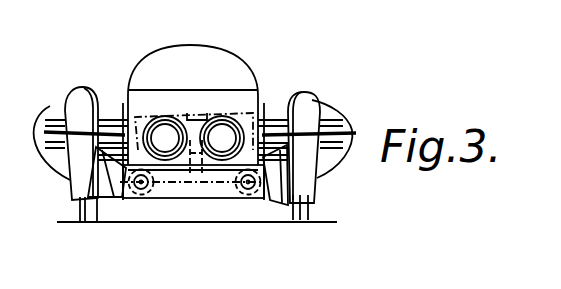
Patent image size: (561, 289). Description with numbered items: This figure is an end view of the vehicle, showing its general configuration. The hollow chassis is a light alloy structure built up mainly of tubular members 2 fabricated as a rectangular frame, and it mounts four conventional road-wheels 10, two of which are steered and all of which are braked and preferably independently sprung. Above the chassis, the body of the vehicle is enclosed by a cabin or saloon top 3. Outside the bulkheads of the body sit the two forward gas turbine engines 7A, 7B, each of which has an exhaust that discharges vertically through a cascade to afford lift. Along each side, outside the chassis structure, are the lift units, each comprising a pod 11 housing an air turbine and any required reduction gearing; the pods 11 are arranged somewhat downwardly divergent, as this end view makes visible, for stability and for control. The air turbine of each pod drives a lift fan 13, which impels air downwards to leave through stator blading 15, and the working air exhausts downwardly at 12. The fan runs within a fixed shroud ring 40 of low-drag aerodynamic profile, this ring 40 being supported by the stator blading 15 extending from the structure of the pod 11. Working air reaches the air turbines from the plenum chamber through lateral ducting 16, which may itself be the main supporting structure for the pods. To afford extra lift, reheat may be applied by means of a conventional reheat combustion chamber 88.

The cabin or saloon top 3 is at (217, 55).
The forward gas turbine engine 7A is at (223, 128).
The forward gas turbine engine 7B is at (165, 132).
The lift fan 13 is at (53, 128).
The shroud ring 40 is at (353, 131).
The pod 11 is at (315, 160).
The stator blading 15 is at (62, 143).
The working air exhaust 12 is at (72, 205).
The road-wheel 10 is at (300, 213).
The lateral ducting 16 is at (282, 182).
The tubular members 2 is at (234, 184).
The reheat combustion chamber 88 is at (154, 188).